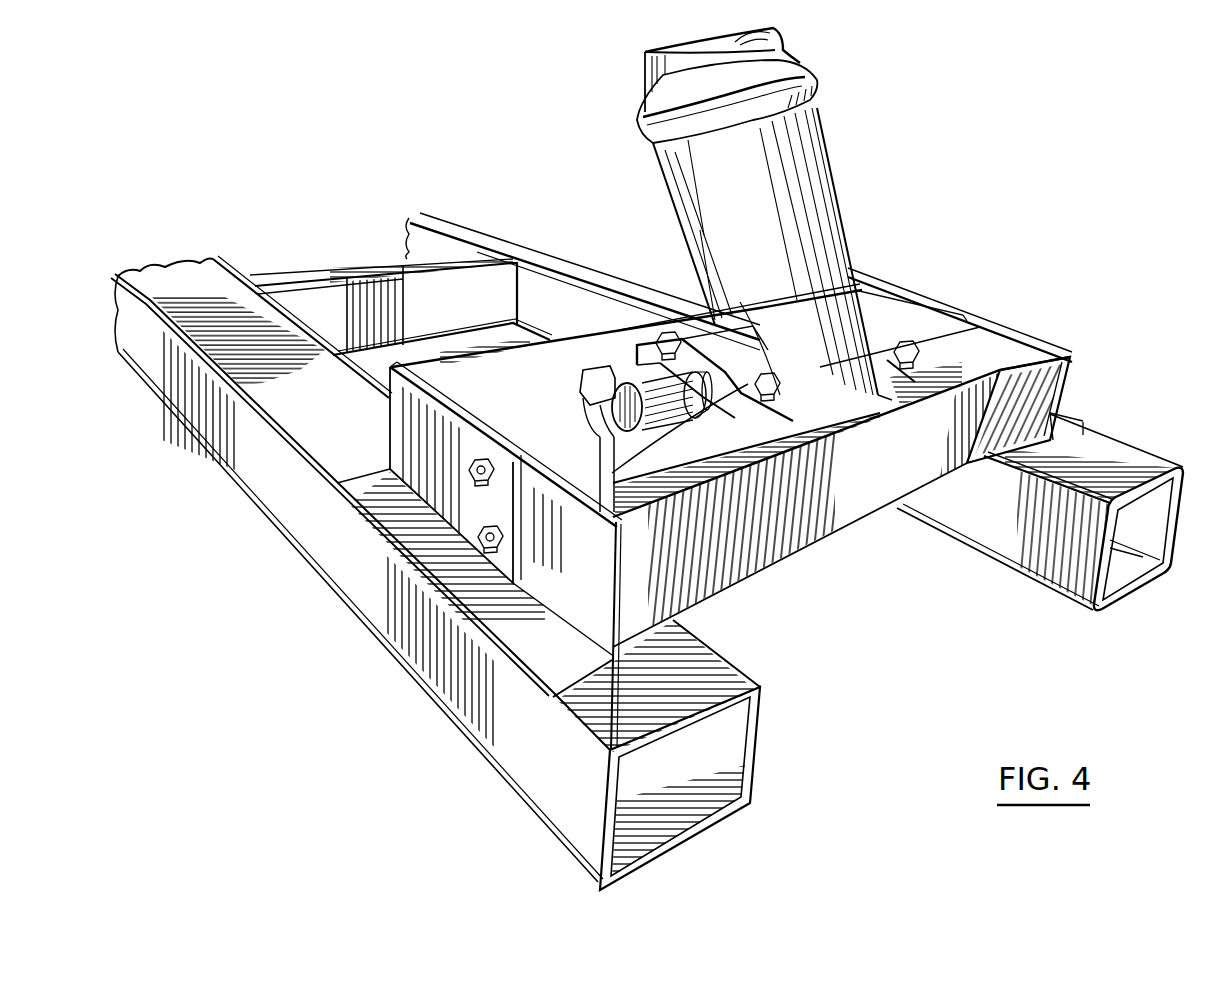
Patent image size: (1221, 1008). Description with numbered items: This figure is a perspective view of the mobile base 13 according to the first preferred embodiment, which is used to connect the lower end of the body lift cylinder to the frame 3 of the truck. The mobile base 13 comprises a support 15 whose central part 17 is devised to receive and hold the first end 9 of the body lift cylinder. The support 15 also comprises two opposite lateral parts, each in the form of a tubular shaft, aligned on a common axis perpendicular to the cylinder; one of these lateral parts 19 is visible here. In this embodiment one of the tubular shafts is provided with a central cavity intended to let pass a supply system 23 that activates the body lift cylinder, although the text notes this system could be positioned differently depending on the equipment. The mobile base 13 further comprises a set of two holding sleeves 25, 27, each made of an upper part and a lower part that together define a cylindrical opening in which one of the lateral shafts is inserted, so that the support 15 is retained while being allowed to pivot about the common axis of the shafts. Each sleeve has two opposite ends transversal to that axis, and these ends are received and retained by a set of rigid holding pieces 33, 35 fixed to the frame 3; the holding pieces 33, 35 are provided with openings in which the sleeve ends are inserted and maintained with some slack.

The frame 3 is at (1137, 436).
The first end 9 is at (793, 167).
The mobile base 13 is at (916, 258).
The support 15 is at (845, 320).
The central part 17 is at (823, 347).
The lateral part 19 is at (697, 420).
The supply system 23 is at (588, 415).
The holding sleeve 25 is at (745, 297).
The holding sleeve 27 is at (937, 364).
The rigid holding piece 33 is at (560, 343).
The rigid holding piece 35 is at (1020, 360).